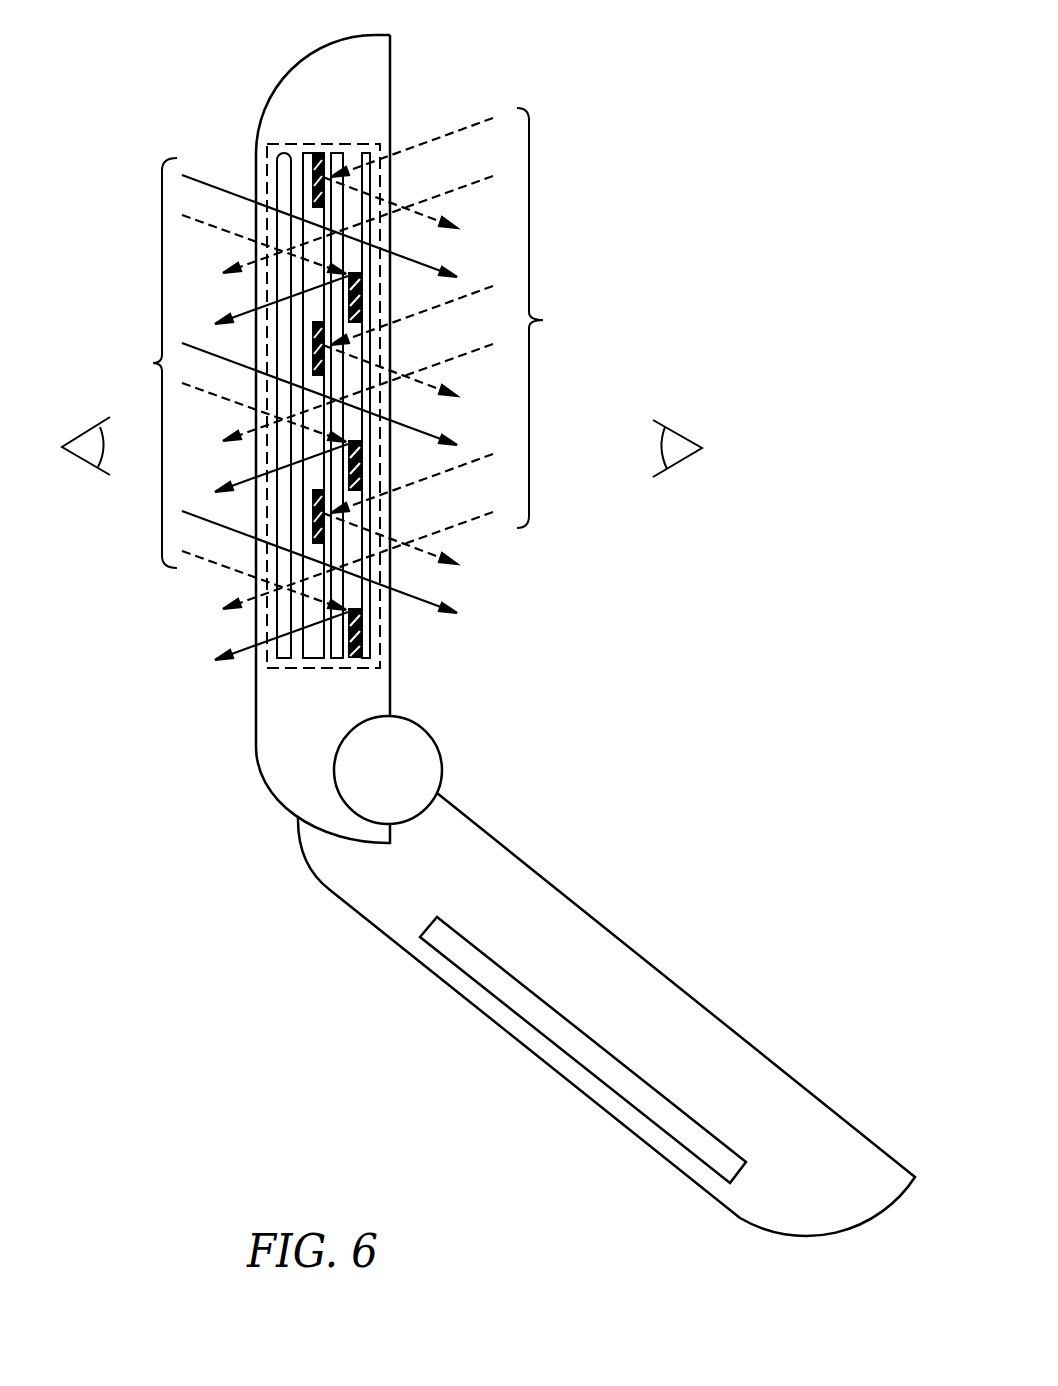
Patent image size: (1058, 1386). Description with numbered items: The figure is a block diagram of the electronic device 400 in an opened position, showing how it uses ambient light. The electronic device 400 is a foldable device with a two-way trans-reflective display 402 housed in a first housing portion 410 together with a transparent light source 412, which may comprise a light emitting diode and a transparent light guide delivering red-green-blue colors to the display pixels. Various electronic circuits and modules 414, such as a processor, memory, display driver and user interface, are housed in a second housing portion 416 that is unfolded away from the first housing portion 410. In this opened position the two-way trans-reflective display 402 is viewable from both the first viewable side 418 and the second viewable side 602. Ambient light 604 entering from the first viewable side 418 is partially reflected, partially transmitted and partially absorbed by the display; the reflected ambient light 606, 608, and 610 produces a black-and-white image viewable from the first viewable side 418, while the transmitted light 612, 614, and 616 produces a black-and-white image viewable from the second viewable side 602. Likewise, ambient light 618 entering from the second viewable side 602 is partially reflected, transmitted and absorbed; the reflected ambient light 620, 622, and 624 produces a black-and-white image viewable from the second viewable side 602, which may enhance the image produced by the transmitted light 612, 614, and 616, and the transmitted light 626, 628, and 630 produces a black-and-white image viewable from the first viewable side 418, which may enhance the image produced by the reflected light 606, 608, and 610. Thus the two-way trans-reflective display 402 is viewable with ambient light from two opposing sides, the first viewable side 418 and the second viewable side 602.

The electronic device 400 is at (196, 1007).
The two-way trans-reflective display 402 is at (342, 144).
The first housing portion 410 is at (297, 66).
The transparent light source 412 is at (284, 152).
The electronic circuits and modules 414 is at (622, 1063).
The second housing portion 416 is at (565, 1080).
The first viewable side 418 is at (88, 460).
The second viewable side 602 is at (683, 430).
The ambient light 604 is at (152, 363).
The reflected ambient light 606 is at (243, 311).
The reflected ambient light 608 is at (243, 479).
The reflected ambient light 610 is at (243, 647).
The transmitted light 612 is at (429, 262).
The transmitted light 614 is at (429, 430).
The transmitted light 616 is at (429, 598).
The ambient light 618 is at (550, 318).
The reflected ambient light 620 is at (428, 215).
The reflected ambient light 622 is at (428, 383).
The reflected ambient light 624 is at (428, 551).
The transmitted light 626 is at (243, 262).
The transmitted light 628 is at (243, 430).
The transmitted light 630 is at (243, 598).